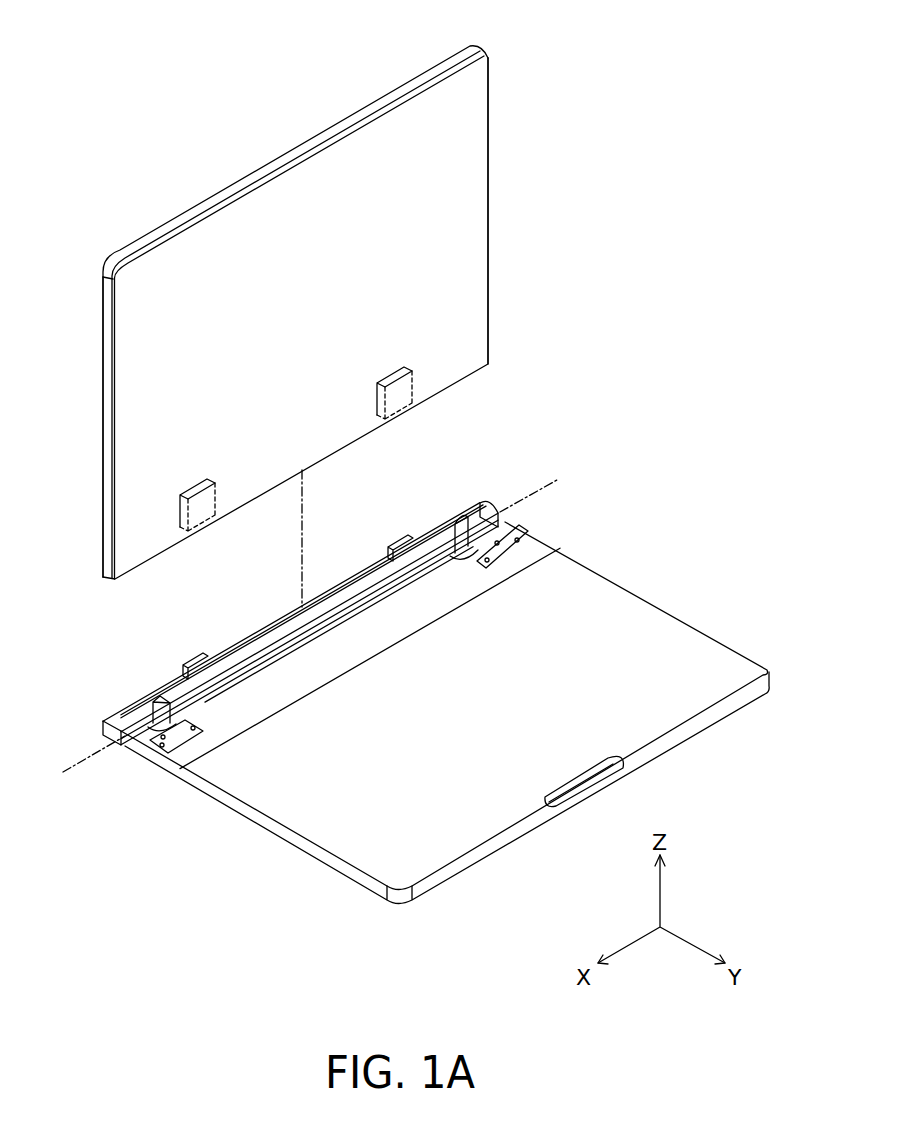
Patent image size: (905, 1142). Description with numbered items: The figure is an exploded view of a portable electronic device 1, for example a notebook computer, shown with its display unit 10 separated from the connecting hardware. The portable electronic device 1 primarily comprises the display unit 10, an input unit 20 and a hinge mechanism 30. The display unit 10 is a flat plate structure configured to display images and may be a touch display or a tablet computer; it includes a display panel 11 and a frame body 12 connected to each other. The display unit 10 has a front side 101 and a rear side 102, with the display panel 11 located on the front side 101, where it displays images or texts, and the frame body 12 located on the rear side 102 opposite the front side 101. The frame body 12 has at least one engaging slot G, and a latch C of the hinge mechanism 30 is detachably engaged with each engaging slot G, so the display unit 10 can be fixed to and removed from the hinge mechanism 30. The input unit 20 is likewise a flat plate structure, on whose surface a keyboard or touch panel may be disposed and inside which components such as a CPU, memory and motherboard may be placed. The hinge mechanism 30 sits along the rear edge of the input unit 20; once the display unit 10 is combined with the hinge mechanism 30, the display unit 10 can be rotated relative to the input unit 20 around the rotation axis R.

The portable electronic device 1 is at (83, 83).
The display unit 10 is at (547, 14).
The display panel 11 is at (490, 56).
The frame body 12 is at (486, 46).
The front side 101 is at (470, 219).
The rear side 102 is at (103, 425).
The input unit 20 is at (652, 578).
The hinge mechanism 30 is at (103, 728).
The engaging slot G is at (408, 404).
The latch C is at (400, 546).
The rotation axis R is at (299, 638).